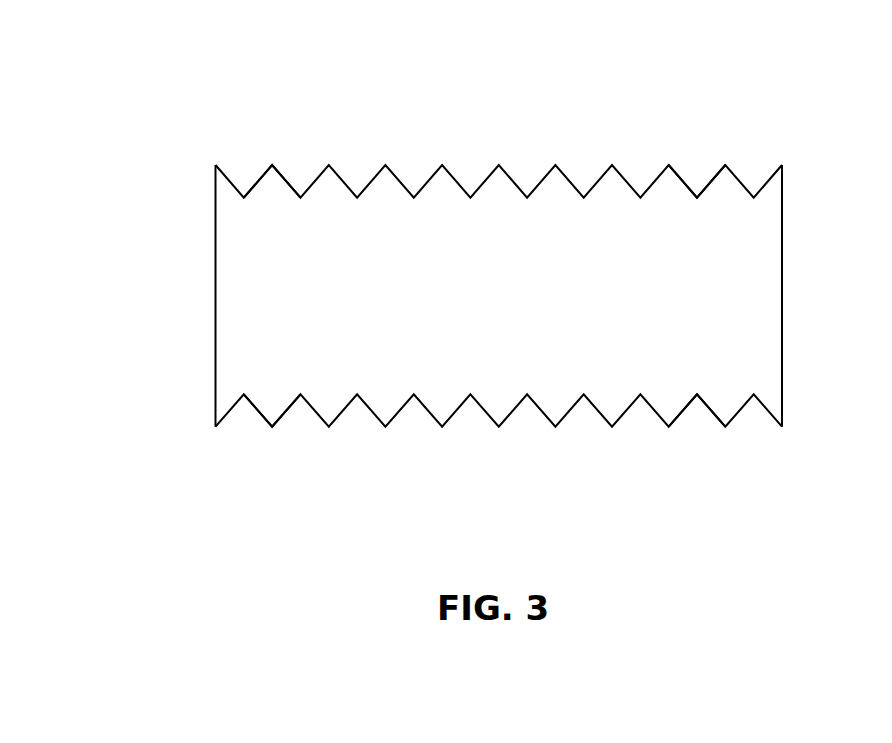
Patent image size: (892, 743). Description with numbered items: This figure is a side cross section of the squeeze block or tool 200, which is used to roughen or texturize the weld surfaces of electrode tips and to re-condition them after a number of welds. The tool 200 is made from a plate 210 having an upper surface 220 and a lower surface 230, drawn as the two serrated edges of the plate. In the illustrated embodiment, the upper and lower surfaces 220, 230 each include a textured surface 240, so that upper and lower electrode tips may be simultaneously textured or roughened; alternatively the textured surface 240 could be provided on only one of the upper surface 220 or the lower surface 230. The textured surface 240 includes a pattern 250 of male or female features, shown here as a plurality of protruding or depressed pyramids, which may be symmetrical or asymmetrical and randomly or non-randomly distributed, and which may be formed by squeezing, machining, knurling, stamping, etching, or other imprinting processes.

The tool 200 is at (422, 268).
The plate 210 is at (443, 375).
The upper surface 220 is at (408, 176).
The lower surface 230 is at (527, 426).
The textured surface 240 is at (697, 197).
The pattern 250 is at (272, 165).